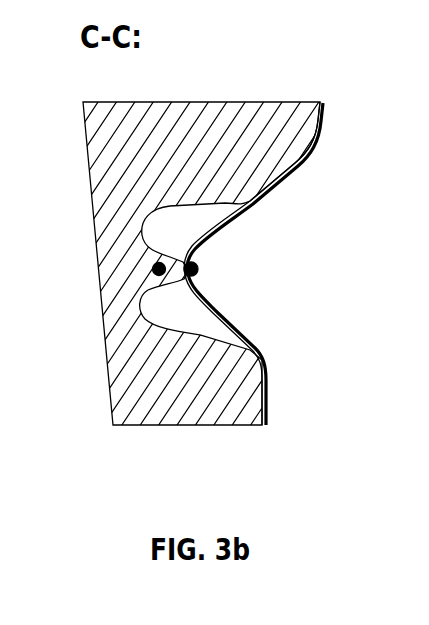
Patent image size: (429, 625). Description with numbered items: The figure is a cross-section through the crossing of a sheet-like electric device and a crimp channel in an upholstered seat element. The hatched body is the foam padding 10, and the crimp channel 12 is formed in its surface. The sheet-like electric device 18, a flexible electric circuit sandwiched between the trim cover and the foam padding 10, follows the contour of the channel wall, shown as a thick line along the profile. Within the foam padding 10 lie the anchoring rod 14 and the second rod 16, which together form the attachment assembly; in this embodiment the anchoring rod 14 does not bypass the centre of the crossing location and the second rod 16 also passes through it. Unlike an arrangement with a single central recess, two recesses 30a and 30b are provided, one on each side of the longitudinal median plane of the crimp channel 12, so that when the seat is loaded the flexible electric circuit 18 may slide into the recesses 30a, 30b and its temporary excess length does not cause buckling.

The foam padding 10 is at (190, 100).
The crimp channel 12 is at (323, 315).
The anchoring rod 14 is at (156, 265).
The second rod 16 is at (197, 277).
The sheet-like electric device 18 is at (290, 175).
The recess 30a is at (182, 228).
The recess 30b is at (143, 313).